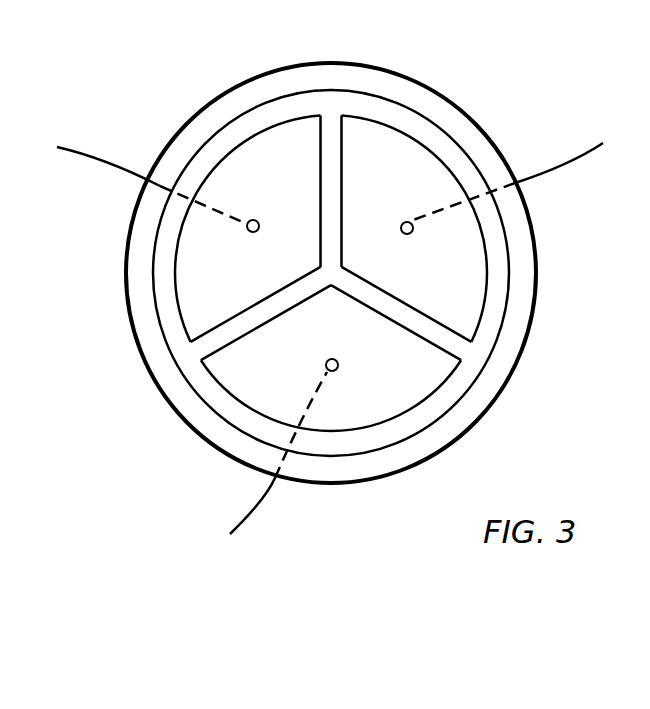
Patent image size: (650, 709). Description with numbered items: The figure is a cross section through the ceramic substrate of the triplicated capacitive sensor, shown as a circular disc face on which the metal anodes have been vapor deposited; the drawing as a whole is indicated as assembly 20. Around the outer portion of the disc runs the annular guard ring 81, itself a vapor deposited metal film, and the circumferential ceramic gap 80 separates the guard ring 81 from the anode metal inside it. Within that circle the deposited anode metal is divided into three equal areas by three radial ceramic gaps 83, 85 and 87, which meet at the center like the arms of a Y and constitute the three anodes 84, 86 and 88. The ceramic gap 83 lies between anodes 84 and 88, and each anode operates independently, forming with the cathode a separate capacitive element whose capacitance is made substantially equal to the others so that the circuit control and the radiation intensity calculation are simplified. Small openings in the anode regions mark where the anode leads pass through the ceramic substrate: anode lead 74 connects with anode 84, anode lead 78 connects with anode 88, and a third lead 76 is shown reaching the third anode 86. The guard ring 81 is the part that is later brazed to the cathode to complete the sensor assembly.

The cable assembly 20 is at (478, 433).
The annular guard ring 81 is at (478, 128).
The ceramic gap 80 is at (277, 107).
The ceramic gap 83 is at (343, 133).
The ceramic gap 85 is at (212, 350).
The ceramic gap 87 is at (447, 332).
The anode 88 is at (395, 160).
The anode 84 is at (192, 290).
The anode 86 is at (370, 403).
The anode lead 74 is at (90, 153).
The anode lead 78 is at (573, 162).
The third conductor 76 is at (247, 518).